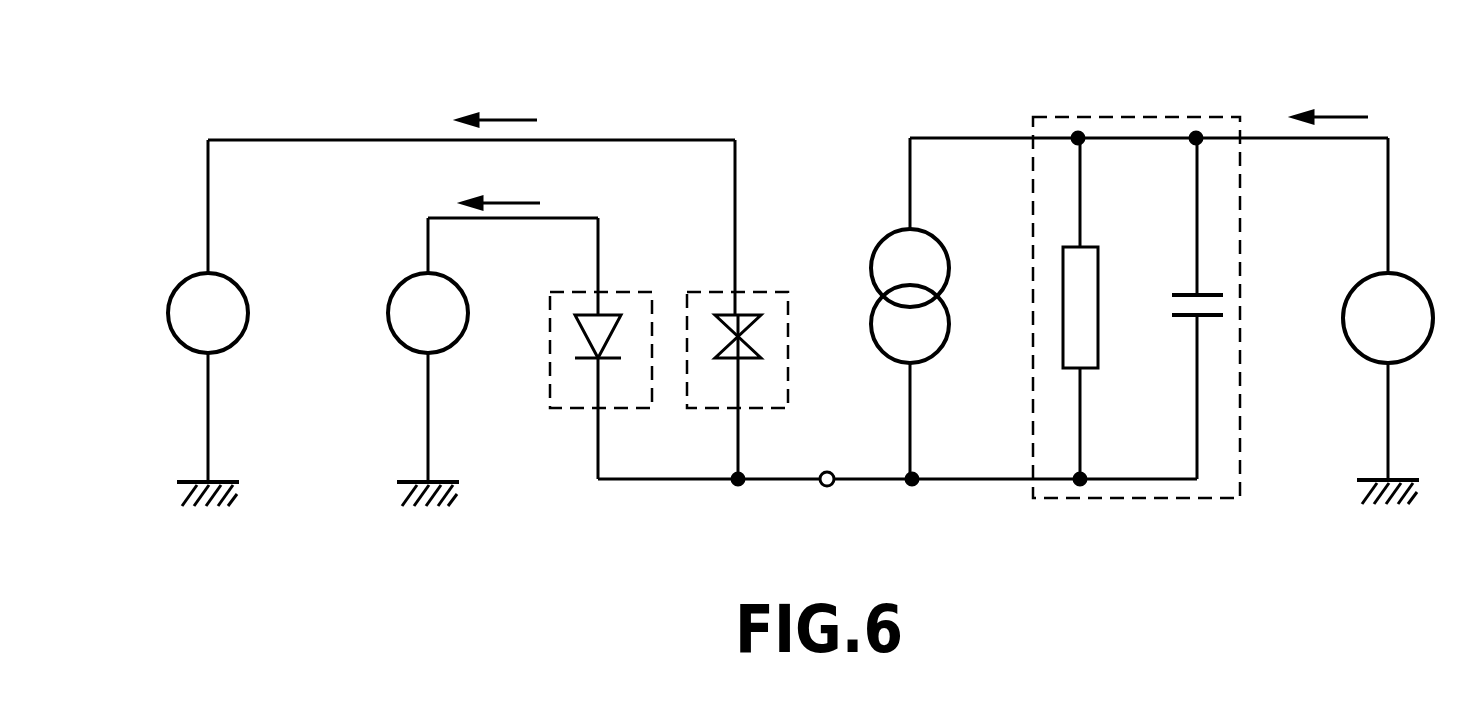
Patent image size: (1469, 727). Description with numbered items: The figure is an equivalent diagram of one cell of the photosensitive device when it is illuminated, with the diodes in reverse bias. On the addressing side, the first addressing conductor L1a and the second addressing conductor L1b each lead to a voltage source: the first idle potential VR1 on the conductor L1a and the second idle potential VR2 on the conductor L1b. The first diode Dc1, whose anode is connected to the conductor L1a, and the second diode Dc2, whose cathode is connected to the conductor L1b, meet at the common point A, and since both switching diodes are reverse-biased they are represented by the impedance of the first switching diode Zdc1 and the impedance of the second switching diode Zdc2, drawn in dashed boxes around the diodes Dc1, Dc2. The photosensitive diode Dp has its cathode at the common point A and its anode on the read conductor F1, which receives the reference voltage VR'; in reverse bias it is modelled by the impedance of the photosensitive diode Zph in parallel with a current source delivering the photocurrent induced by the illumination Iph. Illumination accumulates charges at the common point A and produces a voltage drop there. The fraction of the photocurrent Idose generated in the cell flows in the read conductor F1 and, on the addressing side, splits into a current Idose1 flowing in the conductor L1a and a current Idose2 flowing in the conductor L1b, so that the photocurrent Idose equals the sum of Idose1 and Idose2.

The second addressing conductor L1b is at (340, 139).
The first addressing conductor L1a is at (590, 217).
The current flowing in conductor L1b Idose2 is at (514, 102).
The current flowing in conductor L1a Idose1 is at (516, 186).
The photocurrent Idose is at (1331, 101).
The second idle potential VR2 is at (208, 389).
The first idle potential VR1 is at (428, 389).
The first diode Dc1 is at (610, 322).
The second diode Dc2 is at (748, 326).
The impedance of the first switching diode Zdc1 is at (615, 410).
The impedance of the second switching diode Zdc2 is at (752, 410).
The common point A is at (828, 498).
The photocurrent induced by the illumination Iph is at (930, 311).
The impedance of the photosensitive diode Zph is at (1145, 503).
The photosensitive diode Dp is at (1024, 402).
The read conductor F1 is at (1388, 192).
The reference voltage VR' is at (1388, 388).